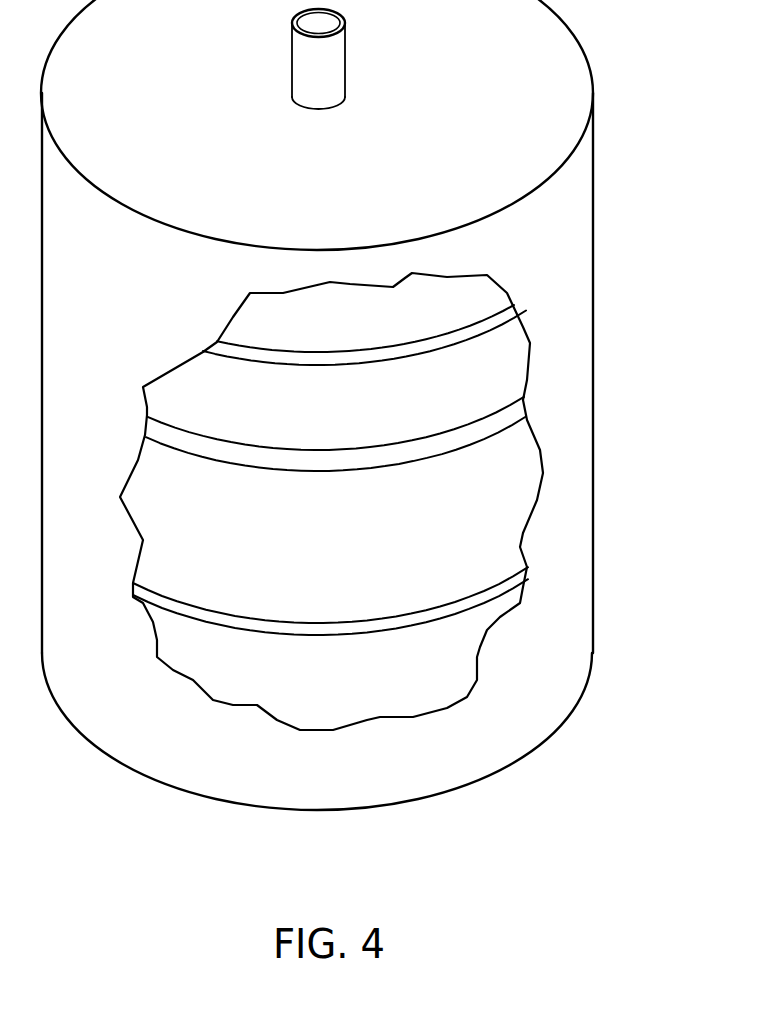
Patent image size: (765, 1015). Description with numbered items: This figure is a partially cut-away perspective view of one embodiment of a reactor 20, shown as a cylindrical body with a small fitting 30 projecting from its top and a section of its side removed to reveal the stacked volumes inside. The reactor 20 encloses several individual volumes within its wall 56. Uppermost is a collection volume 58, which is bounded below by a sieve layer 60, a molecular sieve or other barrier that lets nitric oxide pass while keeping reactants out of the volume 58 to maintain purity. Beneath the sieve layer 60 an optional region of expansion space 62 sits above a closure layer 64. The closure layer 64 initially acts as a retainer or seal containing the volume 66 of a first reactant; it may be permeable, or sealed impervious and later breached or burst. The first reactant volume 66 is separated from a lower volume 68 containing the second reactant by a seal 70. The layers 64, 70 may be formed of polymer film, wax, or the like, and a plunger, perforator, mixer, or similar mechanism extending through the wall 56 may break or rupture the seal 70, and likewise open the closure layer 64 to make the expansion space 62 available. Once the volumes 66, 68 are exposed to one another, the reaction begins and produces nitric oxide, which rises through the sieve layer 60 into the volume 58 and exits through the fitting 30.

The reactor 20 is at (185, 104).
The fitting 30 is at (335, 63).
The wall 56 is at (575, 182).
The volume 58 is at (457, 303).
The sieve layer 60 is at (509, 313).
The expansion space 62 is at (507, 363).
The closure layer 64 is at (517, 417).
The volume of first reactant 66 is at (517, 483).
The seal 70 is at (520, 580).
The volume containing second reactant 68 is at (460, 650).